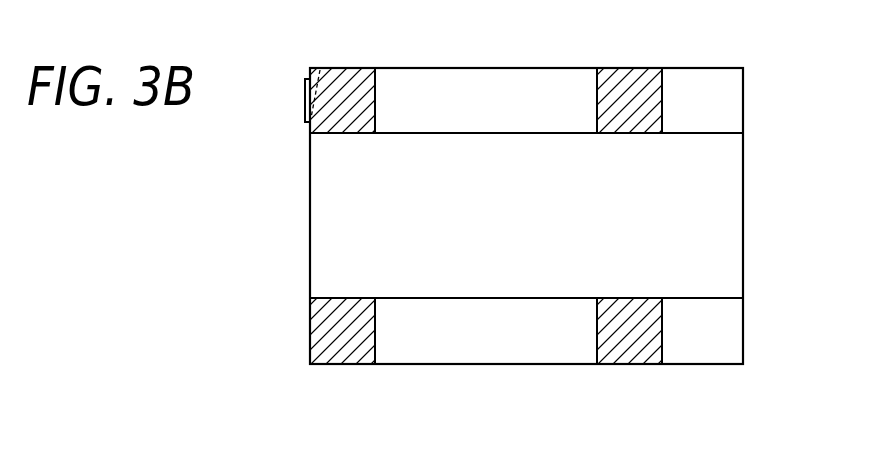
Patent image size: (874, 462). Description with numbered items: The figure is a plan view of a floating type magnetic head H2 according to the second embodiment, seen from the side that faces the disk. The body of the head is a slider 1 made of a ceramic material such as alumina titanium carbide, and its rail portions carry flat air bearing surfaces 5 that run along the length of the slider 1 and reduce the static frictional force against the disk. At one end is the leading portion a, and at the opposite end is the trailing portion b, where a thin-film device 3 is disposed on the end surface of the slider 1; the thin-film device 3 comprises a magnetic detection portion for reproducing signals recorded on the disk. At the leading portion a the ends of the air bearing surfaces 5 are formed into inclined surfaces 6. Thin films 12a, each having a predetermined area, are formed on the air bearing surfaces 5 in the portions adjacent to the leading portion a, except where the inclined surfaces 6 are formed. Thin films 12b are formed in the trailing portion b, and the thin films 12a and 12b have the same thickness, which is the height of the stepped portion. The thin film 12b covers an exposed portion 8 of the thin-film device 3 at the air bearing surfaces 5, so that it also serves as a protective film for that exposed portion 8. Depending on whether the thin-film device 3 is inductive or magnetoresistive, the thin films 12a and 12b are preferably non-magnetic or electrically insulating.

The slider 1 is at (296, 214).
The thin-film device 3 is at (306, 108).
The air bearing surfaces 5 is at (499, 77).
The inclined surfaces 6 is at (703, 78).
The exposed portion 8 is at (322, 62).
The thin films 12a is at (633, 80).
The thin films 12b is at (355, 78).
The leading portion a is at (759, 204).
The trailing portion b is at (297, 279).
The floating type magnetic head H2 is at (756, 271).